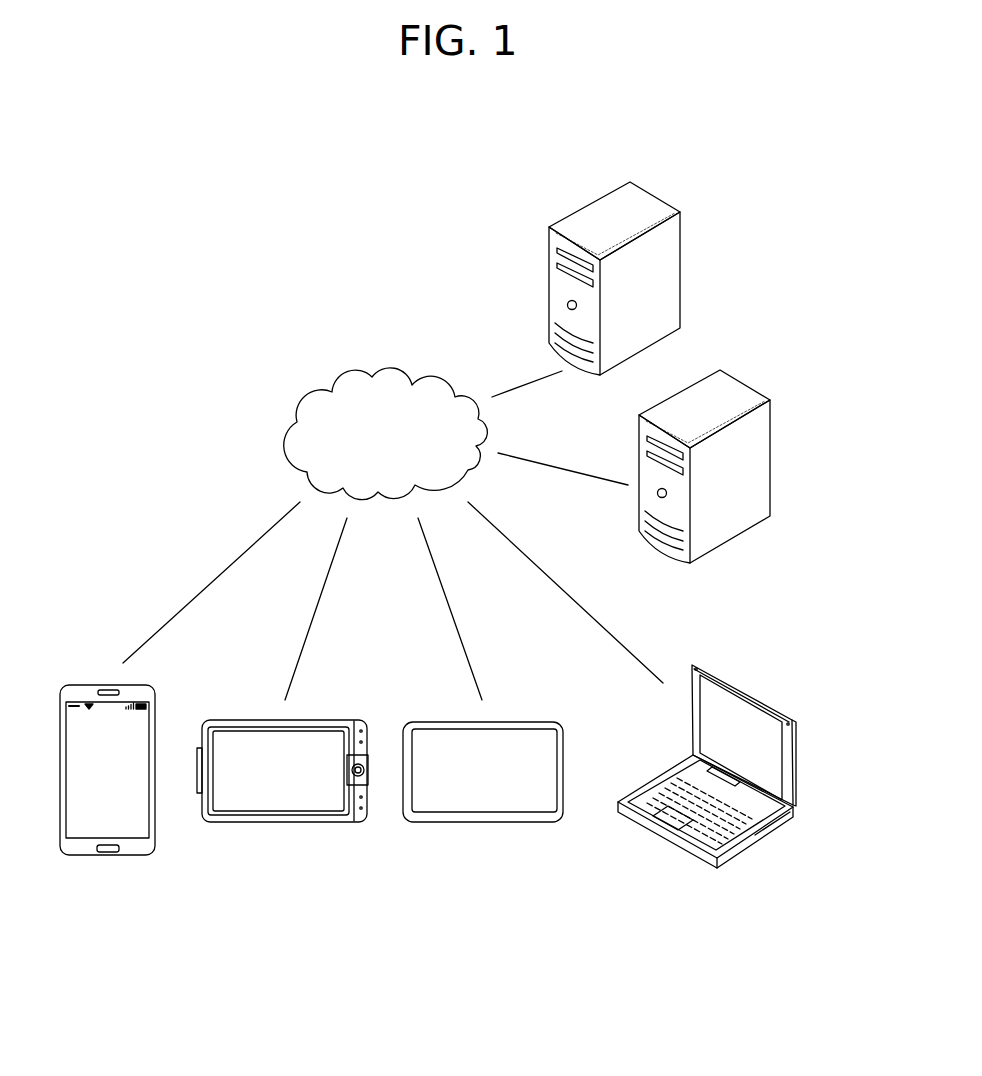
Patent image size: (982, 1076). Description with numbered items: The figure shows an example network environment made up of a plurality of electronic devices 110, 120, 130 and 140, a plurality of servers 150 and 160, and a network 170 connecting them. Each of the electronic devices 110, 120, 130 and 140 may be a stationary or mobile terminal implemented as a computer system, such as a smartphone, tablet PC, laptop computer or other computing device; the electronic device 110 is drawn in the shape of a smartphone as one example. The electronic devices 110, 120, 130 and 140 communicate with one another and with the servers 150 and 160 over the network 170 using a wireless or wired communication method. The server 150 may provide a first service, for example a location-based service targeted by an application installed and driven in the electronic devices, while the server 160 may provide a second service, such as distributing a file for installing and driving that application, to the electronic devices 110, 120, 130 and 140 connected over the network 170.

The electronic device 110 is at (108, 858).
The electronic device 120 is at (282, 824).
The electronic device 130 is at (483, 824).
The electronic device 140 is at (795, 765).
The server 150 is at (770, 456).
The server 160 is at (680, 268).
The network 170 is at (388, 368).